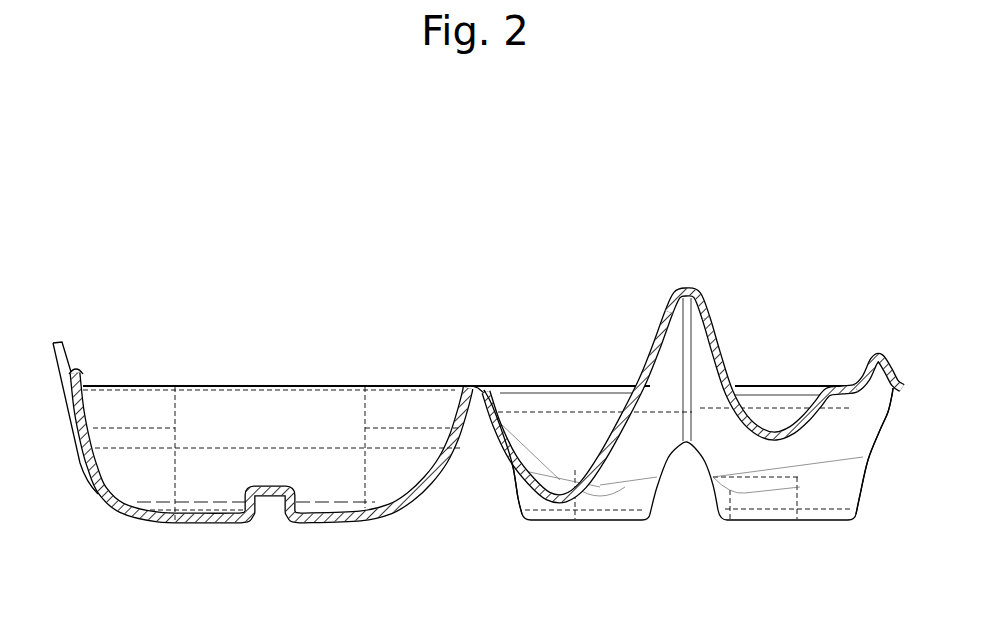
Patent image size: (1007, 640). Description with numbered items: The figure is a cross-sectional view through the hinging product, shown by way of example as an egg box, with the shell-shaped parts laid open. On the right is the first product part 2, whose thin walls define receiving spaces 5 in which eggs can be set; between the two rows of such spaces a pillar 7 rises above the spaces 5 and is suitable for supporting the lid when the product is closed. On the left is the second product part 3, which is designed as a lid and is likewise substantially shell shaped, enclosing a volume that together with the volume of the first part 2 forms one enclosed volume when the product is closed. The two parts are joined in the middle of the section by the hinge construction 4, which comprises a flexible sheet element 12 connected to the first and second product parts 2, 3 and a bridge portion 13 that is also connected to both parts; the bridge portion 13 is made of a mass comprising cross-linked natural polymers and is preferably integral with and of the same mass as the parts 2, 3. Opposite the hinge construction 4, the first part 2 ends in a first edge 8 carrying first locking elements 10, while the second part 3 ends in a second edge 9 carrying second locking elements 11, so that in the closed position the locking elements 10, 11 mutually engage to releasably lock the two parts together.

The first product part 2 is at (751, 201).
The second product part 3 is at (248, 346).
The hinge construction 4 is at (470, 336).
The receiving spaces 5 is at (588, 352).
The pillars 7 is at (685, 256).
The first edge 8 is at (878, 428).
The second edge 9 is at (60, 346).
The first locking elements 10 is at (891, 375).
The second locking elements 11 is at (87, 373).
The flexible sheet element 12 is at (484, 386).
The bridge portion 13 is at (480, 410).